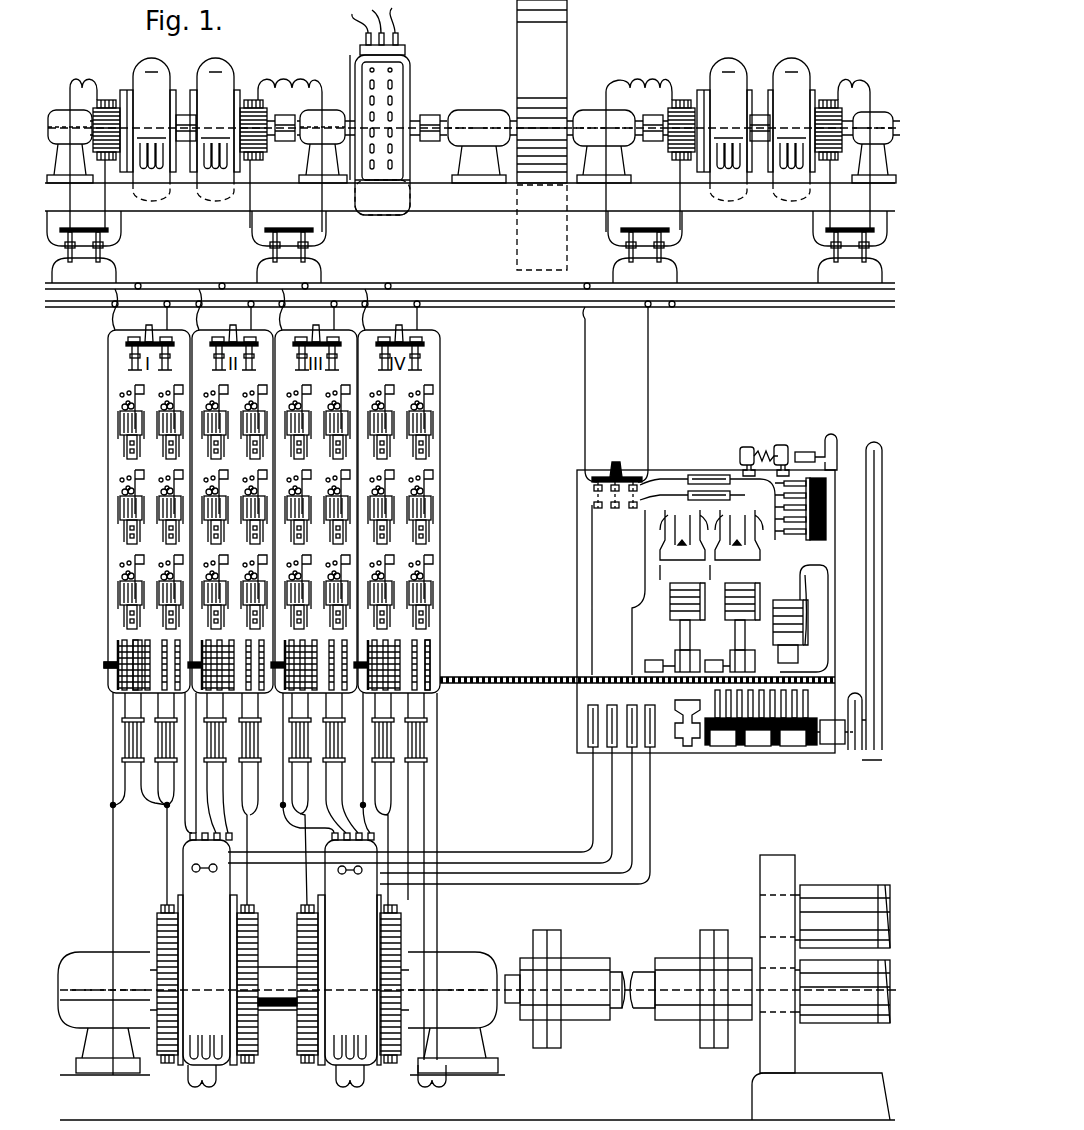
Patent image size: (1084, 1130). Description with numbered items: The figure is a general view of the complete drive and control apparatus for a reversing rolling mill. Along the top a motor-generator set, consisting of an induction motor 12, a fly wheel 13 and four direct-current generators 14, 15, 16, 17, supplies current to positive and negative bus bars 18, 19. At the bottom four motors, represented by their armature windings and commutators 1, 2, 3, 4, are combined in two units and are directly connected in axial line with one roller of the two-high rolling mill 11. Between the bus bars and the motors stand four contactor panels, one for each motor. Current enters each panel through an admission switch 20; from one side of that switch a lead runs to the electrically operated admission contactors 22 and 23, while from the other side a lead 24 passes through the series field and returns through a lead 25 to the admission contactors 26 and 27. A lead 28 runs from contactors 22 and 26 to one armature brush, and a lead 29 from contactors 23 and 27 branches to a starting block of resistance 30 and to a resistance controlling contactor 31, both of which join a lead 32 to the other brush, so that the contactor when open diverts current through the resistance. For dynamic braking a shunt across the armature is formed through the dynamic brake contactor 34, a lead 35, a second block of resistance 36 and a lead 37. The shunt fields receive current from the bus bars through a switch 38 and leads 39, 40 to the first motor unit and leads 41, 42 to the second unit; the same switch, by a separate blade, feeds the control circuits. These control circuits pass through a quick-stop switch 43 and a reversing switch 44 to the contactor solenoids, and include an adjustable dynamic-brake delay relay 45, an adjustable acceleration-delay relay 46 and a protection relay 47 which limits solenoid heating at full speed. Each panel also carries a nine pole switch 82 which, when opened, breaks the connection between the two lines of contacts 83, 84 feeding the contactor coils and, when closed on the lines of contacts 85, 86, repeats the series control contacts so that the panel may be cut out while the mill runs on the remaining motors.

The armature winding 1 is at (157, 930).
The armature winding 2 is at (253, 925).
The armature winding 3 is at (301, 925).
The armature winding 4 is at (402, 920).
The two-high rolling mill 11 is at (848, 1025).
The induction motor 12 is at (400, 58).
The fly wheel 13 is at (567, 62).
The direct-current generator 14 is at (117, 100).
The direct-current generator 15 is at (246, 100).
The direct-current generator 16 is at (694, 100).
The direct-current generator 17 is at (817, 100).
The positive bus bar 18 is at (735, 289).
The negative bus bar 19 is at (735, 307).
The admission switch 20 is at (142, 348).
The admission contactor 22 is at (138, 436).
The admission contactor 23 is at (140, 522).
The lead 24 is at (188, 808).
The lead 25 is at (196, 792).
The admission contactor 26 is at (170, 455).
The admission contactor 27 is at (174, 542).
The lead 28 is at (111, 895).
The lead 29 is at (167, 730).
The block of resistance 30 is at (162, 783).
The resistance controlling contactor 31 is at (180, 610).
The lead 32 is at (167, 873).
The dynamic brake contactor 34 is at (140, 606).
The lead 35 is at (134, 730).
The block of resistance 36 is at (126, 783).
The lead 37 is at (146, 806).
The switch 38 is at (596, 490).
The lead 39 is at (592, 812).
The lead 40 is at (216, 874).
The lead 41 is at (651, 812).
The lead 42 is at (631, 812).
The quick-stop switch 43 is at (826, 503).
The reversing switch 44 is at (800, 748).
The dynamic-brake delay relay 45 is at (738, 612).
The acceleration-delay relay 46 is at (672, 612).
The protection relay 47 is at (805, 580).
The nine pole switch 82 is at (118, 680).
The line of contacts 83 is at (137, 643).
The line of contacts 84 is at (138, 641).
The line of contacts 85 is at (417, 643).
The line of contacts 86 is at (432, 650).